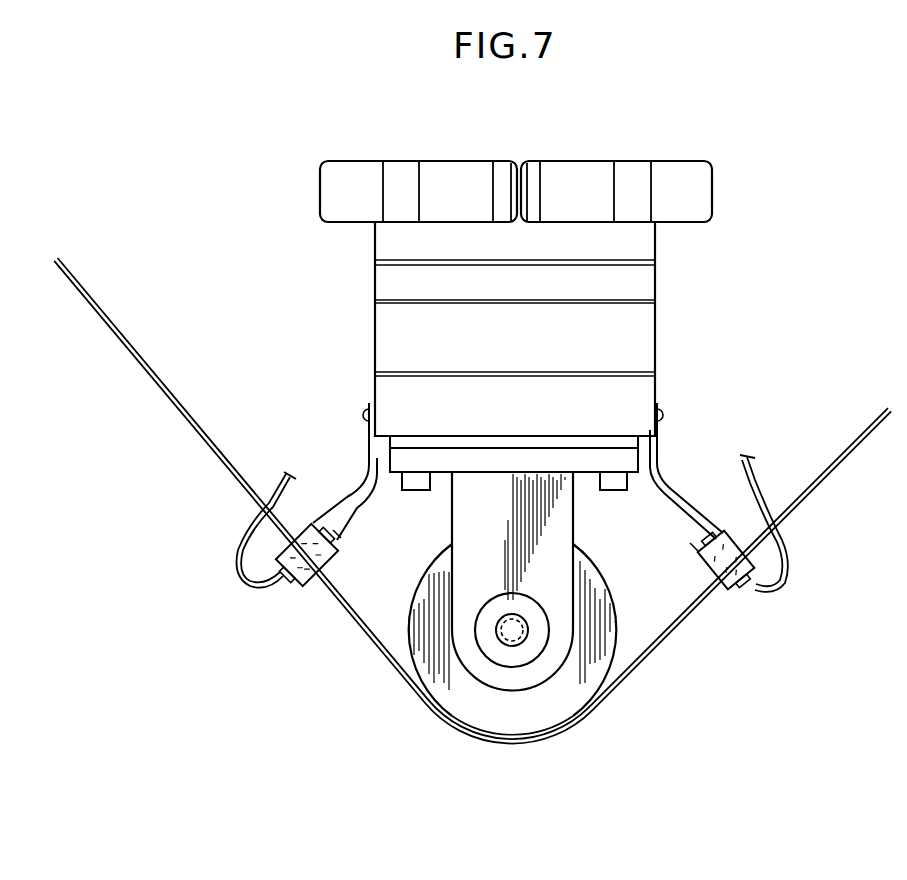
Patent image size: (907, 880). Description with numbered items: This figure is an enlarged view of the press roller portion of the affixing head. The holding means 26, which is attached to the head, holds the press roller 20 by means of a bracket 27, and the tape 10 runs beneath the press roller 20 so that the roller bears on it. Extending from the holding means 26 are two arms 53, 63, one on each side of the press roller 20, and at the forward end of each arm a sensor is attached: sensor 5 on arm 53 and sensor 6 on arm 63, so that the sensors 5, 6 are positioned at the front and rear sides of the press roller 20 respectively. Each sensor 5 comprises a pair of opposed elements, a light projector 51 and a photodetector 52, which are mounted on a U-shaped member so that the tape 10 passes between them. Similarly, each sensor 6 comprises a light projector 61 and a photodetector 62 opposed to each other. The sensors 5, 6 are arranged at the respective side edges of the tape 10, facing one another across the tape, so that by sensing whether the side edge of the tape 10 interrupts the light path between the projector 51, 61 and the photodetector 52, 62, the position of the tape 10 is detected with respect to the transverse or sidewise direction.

The holding means 26 is at (746, 148).
The tape 10 is at (800, 507).
The press roller 20 is at (482, 713).
The bracket 27 is at (540, 663).
The sensor 5 is at (308, 583).
The light projector 51 is at (285, 580).
The photodetector 52 is at (337, 533).
The arm 53 is at (330, 500).
The sensor 6 is at (717, 583).
The light projector 61 is at (743, 597).
The photodetector 62 is at (693, 547).
The arm 63 is at (673, 472).